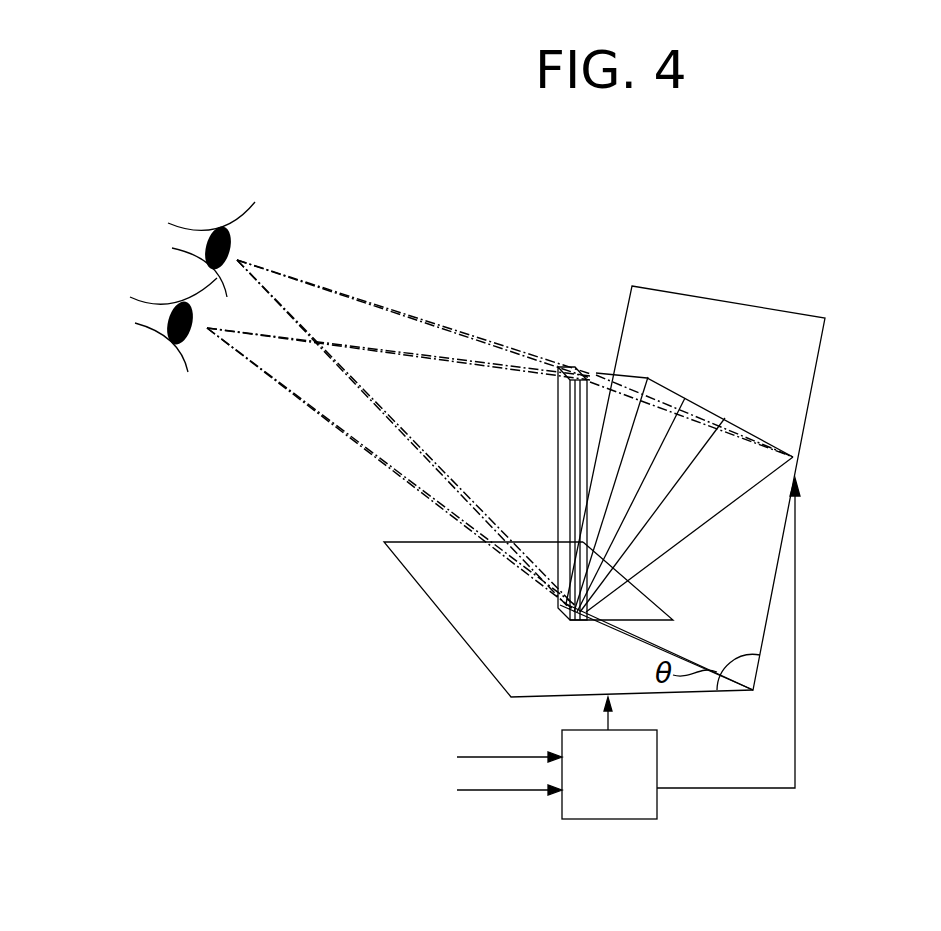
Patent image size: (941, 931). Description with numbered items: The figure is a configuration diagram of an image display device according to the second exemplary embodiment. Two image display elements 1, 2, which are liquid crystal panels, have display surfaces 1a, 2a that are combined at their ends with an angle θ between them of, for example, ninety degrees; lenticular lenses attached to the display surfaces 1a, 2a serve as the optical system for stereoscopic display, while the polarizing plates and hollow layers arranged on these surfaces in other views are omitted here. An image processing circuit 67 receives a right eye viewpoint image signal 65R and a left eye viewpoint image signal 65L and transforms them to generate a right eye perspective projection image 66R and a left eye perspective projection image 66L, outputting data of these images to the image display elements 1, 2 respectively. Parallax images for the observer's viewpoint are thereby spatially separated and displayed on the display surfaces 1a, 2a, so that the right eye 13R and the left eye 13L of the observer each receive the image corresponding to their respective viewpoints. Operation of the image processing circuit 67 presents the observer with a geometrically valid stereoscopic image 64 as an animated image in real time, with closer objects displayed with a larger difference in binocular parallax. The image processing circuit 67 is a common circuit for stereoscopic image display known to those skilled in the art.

The image display element 1 is at (507, 619).
The display surface 1a is at (465, 596).
The image display element 2 is at (740, 468).
The display surface 2a is at (787, 350).
The left eye 13L is at (172, 237).
The right eye 13R is at (133, 313).
The stereoscopic image 64 is at (568, 424).
The right eye viewpoint image signal 65R is at (479, 758).
The left eye viewpoint image signal 65L is at (479, 792).
The right eye perspective projection image 66R is at (633, 437).
The left eye perspective projection image 66L is at (767, 505).
The image processing circuit 67 is at (657, 805).